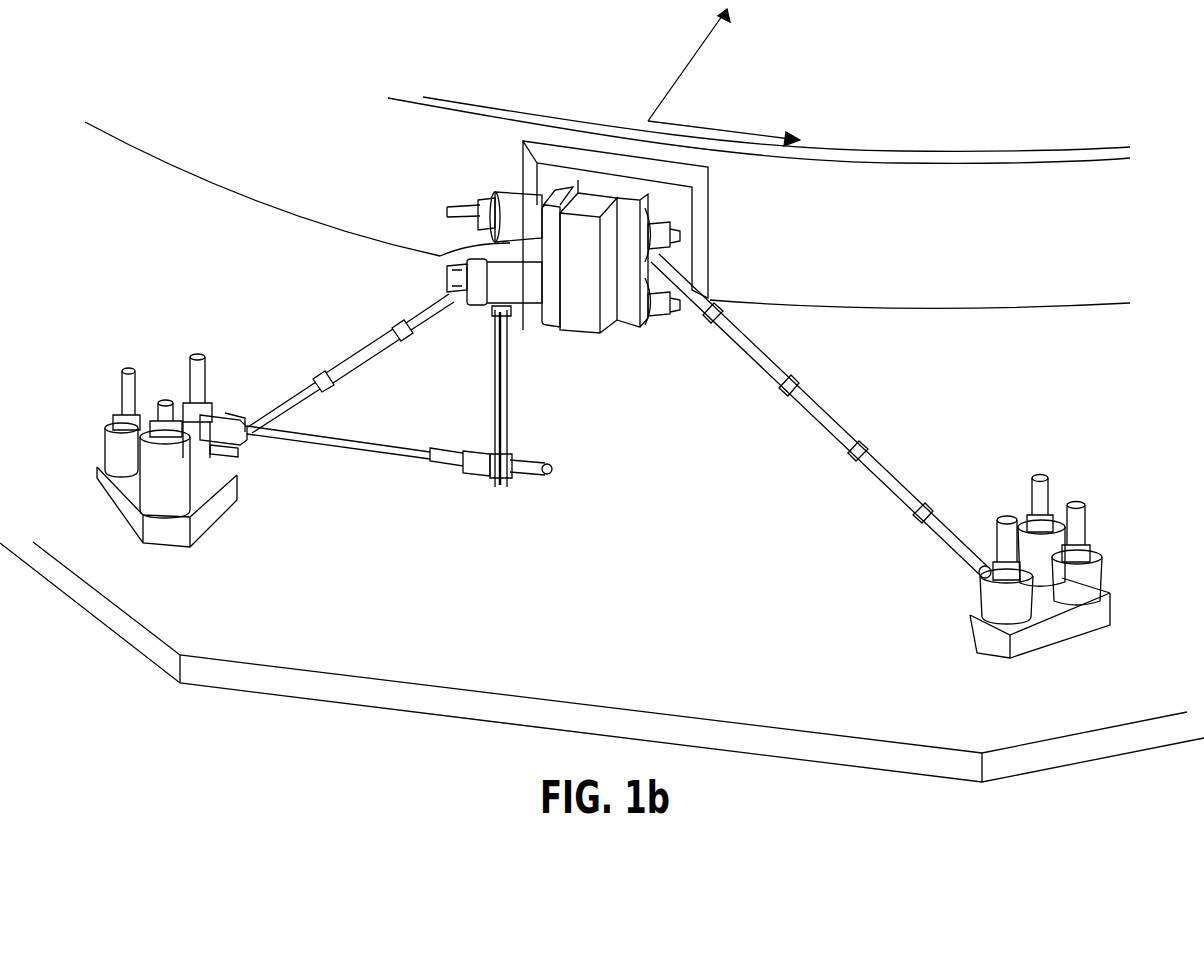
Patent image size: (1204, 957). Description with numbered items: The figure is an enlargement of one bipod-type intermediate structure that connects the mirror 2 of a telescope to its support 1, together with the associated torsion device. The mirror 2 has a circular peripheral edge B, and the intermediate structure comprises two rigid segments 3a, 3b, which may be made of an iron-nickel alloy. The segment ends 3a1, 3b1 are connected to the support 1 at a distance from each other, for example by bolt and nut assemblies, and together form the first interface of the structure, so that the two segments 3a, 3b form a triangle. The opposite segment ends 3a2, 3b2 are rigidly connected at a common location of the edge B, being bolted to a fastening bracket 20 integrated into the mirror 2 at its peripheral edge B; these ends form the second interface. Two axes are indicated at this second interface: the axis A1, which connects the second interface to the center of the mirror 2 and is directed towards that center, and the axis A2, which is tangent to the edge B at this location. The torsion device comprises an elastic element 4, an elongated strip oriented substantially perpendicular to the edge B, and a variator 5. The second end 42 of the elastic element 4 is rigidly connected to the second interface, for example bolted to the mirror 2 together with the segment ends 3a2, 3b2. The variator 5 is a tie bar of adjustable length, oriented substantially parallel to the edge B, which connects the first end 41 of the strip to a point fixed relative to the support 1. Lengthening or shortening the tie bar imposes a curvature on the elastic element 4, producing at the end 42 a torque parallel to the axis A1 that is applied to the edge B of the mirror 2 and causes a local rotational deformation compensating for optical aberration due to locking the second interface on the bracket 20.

The support 1 is at (278, 680).
The mirror 2 is at (270, 178).
The peripheral edge of the mirror B is at (952, 158).
The axis connecting the second interface to the mirror center A1 is at (680, 78).
The axis tangent to the peripheral edge A2 is at (750, 132).
The fastening bracket 20 is at (577, 312).
The rigid segment 3a is at (352, 377).
The end of segment 3a connected to the support 3a1 is at (240, 457).
The end of segment 3a connected to the mirror 3a2 is at (430, 258).
The rigid segment 3b is at (828, 425).
The end of segment 3b connected to the support 3b1 is at (980, 570).
The end of segment 3b connected to the mirror 3b2 is at (655, 258).
The elastic element 4 is at (500, 407).
The first end of the elastic element 41 is at (497, 487).
The second end of the elastic element 42 is at (502, 315).
The variator 5 is at (383, 448).